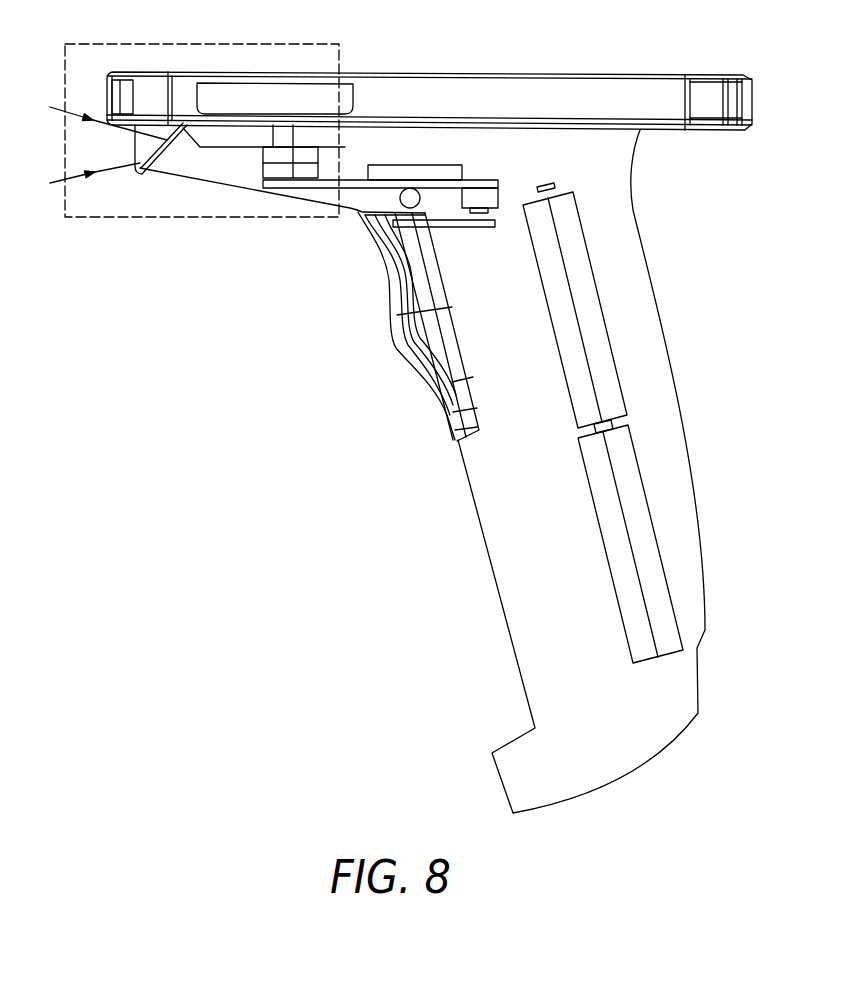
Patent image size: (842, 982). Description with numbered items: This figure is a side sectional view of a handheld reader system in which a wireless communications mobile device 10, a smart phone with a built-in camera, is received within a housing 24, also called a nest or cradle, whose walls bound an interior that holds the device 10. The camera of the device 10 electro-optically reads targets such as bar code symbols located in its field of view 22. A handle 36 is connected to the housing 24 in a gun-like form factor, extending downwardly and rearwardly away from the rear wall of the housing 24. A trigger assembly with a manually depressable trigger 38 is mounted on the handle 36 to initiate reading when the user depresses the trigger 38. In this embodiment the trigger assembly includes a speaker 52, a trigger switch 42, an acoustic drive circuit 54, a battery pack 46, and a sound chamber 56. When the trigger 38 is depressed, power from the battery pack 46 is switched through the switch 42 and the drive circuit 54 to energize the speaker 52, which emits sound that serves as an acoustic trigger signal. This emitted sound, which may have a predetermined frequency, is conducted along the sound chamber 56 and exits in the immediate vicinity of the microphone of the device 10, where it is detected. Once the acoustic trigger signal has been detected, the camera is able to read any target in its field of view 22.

The wireless communications mobile device 10 is at (506, 93).
The housing 24 is at (760, 96).
The field of view 22 is at (110, 170).
The sound chamber 56 is at (223, 137).
The speaker 52 is at (280, 170).
The acoustic drive circuit 54 is at (420, 168).
The trigger switch 42 is at (488, 197).
The trigger 38 is at (395, 343).
The handle 36 is at (505, 572).
The battery pack 46 is at (578, 405).